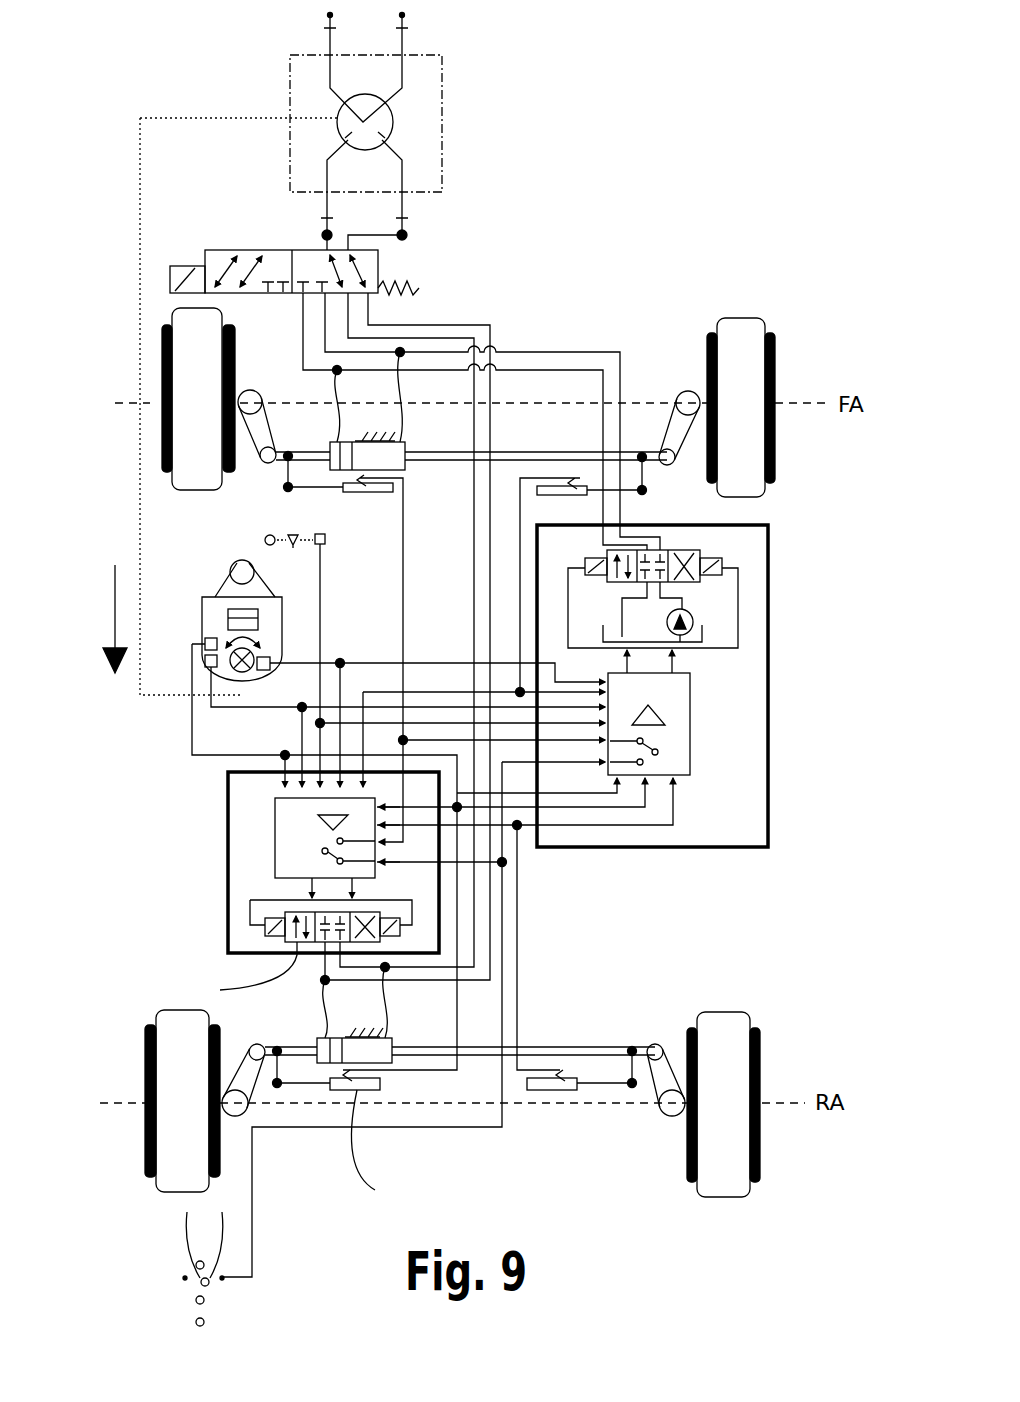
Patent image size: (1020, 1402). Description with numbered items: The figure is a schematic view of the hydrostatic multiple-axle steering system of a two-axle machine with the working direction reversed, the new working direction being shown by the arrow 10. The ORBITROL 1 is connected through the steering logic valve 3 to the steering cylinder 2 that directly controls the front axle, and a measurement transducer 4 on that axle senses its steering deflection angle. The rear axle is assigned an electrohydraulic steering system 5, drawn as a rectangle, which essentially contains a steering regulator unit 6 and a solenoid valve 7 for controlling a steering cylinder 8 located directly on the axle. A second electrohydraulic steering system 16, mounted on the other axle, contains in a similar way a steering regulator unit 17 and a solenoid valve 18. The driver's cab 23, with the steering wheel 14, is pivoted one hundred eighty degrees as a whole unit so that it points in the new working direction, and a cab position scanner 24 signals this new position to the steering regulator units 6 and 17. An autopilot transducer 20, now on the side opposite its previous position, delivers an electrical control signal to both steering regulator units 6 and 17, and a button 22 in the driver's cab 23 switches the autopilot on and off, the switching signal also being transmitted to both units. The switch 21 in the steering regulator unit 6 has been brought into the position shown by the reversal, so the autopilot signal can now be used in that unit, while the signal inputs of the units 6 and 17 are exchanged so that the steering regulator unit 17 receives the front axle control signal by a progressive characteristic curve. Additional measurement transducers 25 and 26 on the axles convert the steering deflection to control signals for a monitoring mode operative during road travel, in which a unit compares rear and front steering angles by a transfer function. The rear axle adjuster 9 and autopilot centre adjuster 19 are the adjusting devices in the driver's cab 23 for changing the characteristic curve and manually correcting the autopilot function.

The ORBITROL 1 is at (305, 98).
The steering cylinder 2 is at (405, 462).
The steering logic valve 3 is at (312, 258).
The measurement transducer 4 is at (343, 490).
The electrohydraulic steering system 5 is at (250, 810).
The steering regulator unit 6 is at (283, 835).
The solenoid valve 7 is at (220, 990).
The steering cylinder 8 is at (325, 1092).
The rear axle adjuster 9 is at (200, 647).
The arrow 10 is at (110, 618).
The steering wheel 14 is at (258, 640).
The electrohydraulic steering system 16 is at (755, 575).
The steering regulator unit 17 is at (673, 738).
The solenoid valve 18 is at (700, 548).
The autopilot centre adjuster 19 is at (203, 668).
The autopilot transducer 20 is at (185, 1278).
The switch 21 is at (322, 853).
The button 22 is at (272, 660).
The driver's cab 23 is at (212, 608).
The cab position scanner 24 is at (258, 540).
The measurement transducer 25 is at (563, 482).
The measurement transducer 26 is at (555, 1080).